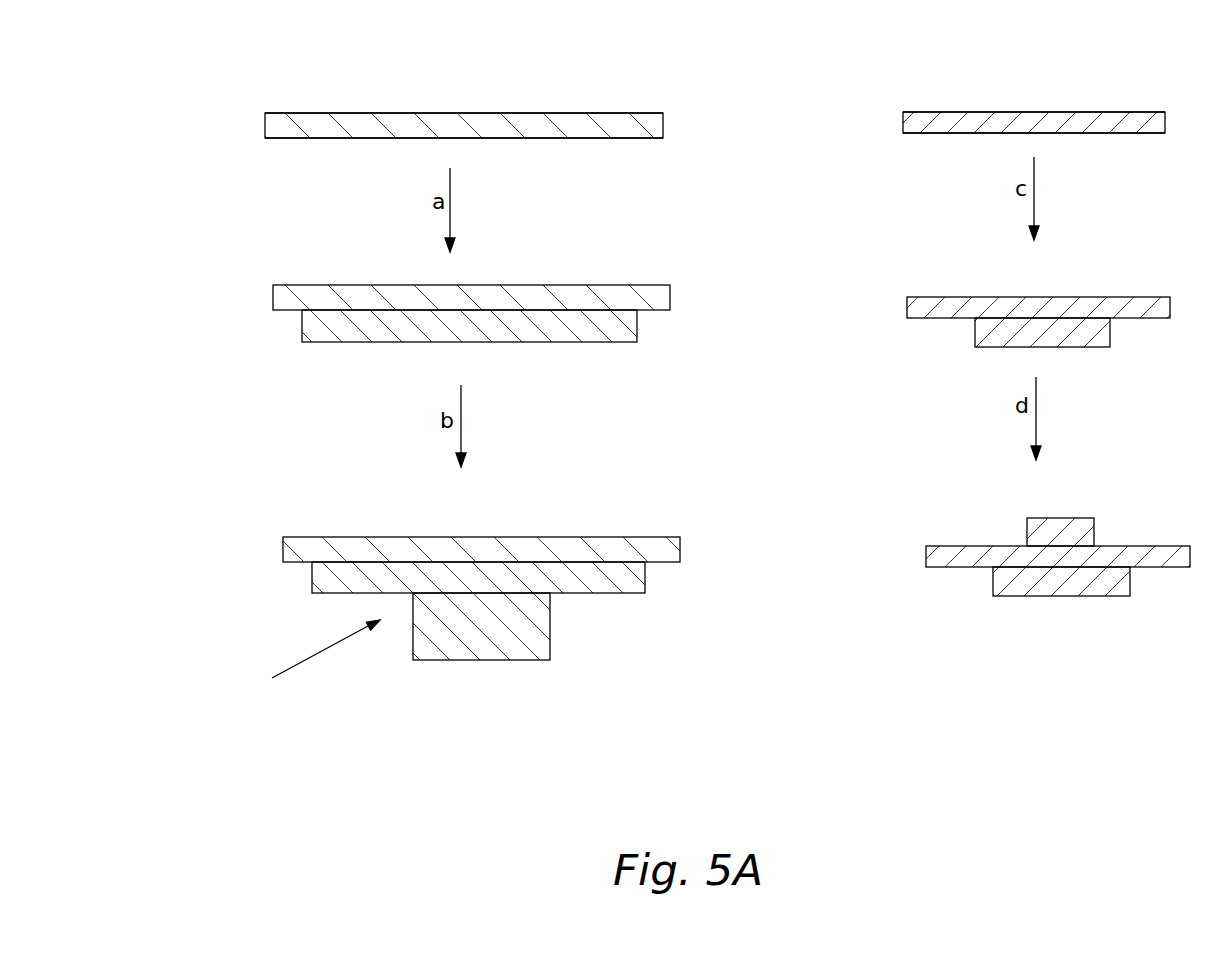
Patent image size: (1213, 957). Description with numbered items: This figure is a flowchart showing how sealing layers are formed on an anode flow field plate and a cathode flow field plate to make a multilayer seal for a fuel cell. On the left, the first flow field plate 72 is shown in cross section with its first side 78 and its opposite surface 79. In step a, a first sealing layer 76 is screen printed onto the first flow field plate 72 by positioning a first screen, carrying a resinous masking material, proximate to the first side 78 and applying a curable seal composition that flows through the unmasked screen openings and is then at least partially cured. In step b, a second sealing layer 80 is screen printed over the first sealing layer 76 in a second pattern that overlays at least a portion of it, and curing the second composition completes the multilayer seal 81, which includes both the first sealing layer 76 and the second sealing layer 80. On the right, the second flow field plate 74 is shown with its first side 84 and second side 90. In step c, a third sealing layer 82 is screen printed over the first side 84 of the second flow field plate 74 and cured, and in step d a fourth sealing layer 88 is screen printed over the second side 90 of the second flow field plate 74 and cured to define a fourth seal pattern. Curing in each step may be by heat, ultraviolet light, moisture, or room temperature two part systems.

The first flow field plate 72 is at (293, 122).
The second flow field plate 74 is at (948, 118).
The first sealing layer 76 is at (487, 337).
The first side 78 is at (342, 138).
The upper surface of first substrate 79 is at (388, 113).
The second sealing layer 80 is at (501, 637).
The multilayer seal 81 is at (311, 659).
The third sealing layer 82 is at (1057, 344).
The first side 84 is at (959, 133).
The fourth sealing layer 88 is at (1081, 544).
The second side 90 is at (1038, 112).